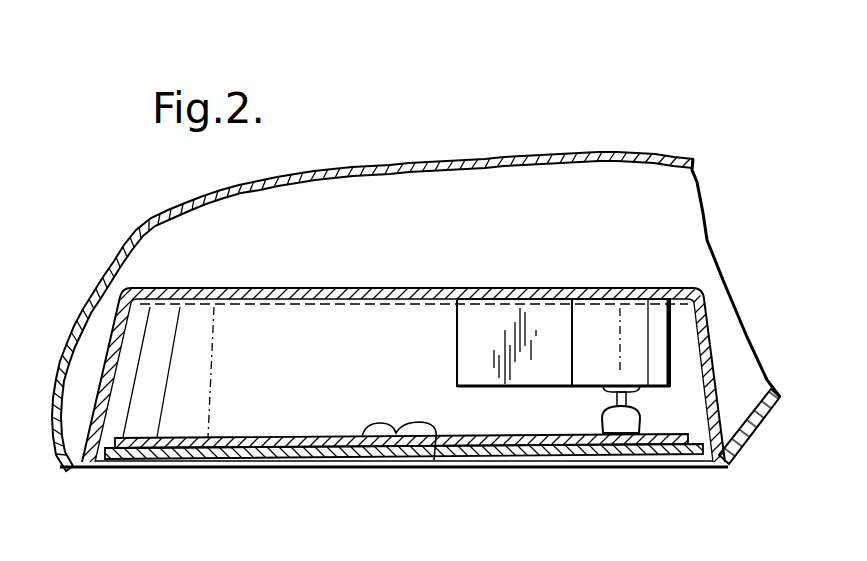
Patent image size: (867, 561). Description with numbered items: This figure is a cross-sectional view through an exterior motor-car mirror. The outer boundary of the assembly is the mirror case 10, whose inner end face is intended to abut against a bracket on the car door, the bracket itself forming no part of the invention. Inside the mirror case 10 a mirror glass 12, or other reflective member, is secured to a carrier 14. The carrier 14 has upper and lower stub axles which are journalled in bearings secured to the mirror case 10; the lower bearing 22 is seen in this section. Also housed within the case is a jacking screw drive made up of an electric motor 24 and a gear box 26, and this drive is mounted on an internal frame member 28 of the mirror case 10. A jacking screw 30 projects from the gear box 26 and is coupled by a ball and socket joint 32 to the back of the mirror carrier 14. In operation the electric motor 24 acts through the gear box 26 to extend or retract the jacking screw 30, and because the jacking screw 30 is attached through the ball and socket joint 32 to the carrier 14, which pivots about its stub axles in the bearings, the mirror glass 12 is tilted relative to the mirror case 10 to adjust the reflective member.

The mirror case 10 is at (390, 164).
The mirror glass 12 is at (317, 458).
The carrier 14 is at (252, 443).
The lower bearing 22 is at (433, 457).
The electric motor 24 is at (527, 313).
The gear box 26 is at (608, 310).
The internal frame member 28 is at (400, 290).
The jacking screw 30 is at (627, 400).
The ball and socket joint 32 is at (607, 423).